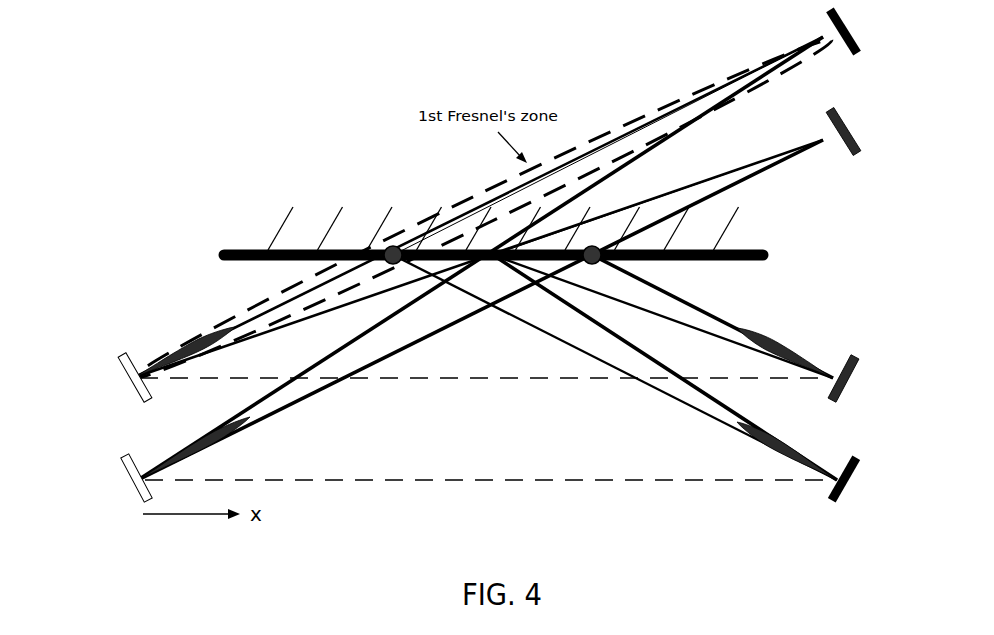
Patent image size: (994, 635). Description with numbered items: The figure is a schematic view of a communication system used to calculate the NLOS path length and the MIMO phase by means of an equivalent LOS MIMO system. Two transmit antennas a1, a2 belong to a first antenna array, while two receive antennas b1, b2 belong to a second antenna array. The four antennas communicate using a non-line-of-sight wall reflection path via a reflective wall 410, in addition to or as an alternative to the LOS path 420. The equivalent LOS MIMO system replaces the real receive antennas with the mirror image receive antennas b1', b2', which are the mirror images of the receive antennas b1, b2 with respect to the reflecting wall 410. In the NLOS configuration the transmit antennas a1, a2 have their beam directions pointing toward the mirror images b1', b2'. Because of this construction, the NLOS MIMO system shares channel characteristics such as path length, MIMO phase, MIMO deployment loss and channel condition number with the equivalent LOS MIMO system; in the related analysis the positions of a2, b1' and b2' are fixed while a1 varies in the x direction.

The reflective wall 410 is at (244, 250).
The LOS path 420 is at (486, 429).
The transmit antenna a1 is at (90, 478).
The transmit antenna a2 is at (90, 378).
The receive antenna b1 is at (887, 479).
The receive antenna b2 is at (887, 378).
The mirror image receive antenna b1' is at (872, 32).
The mirror image receive antenna b2' is at (871, 132).